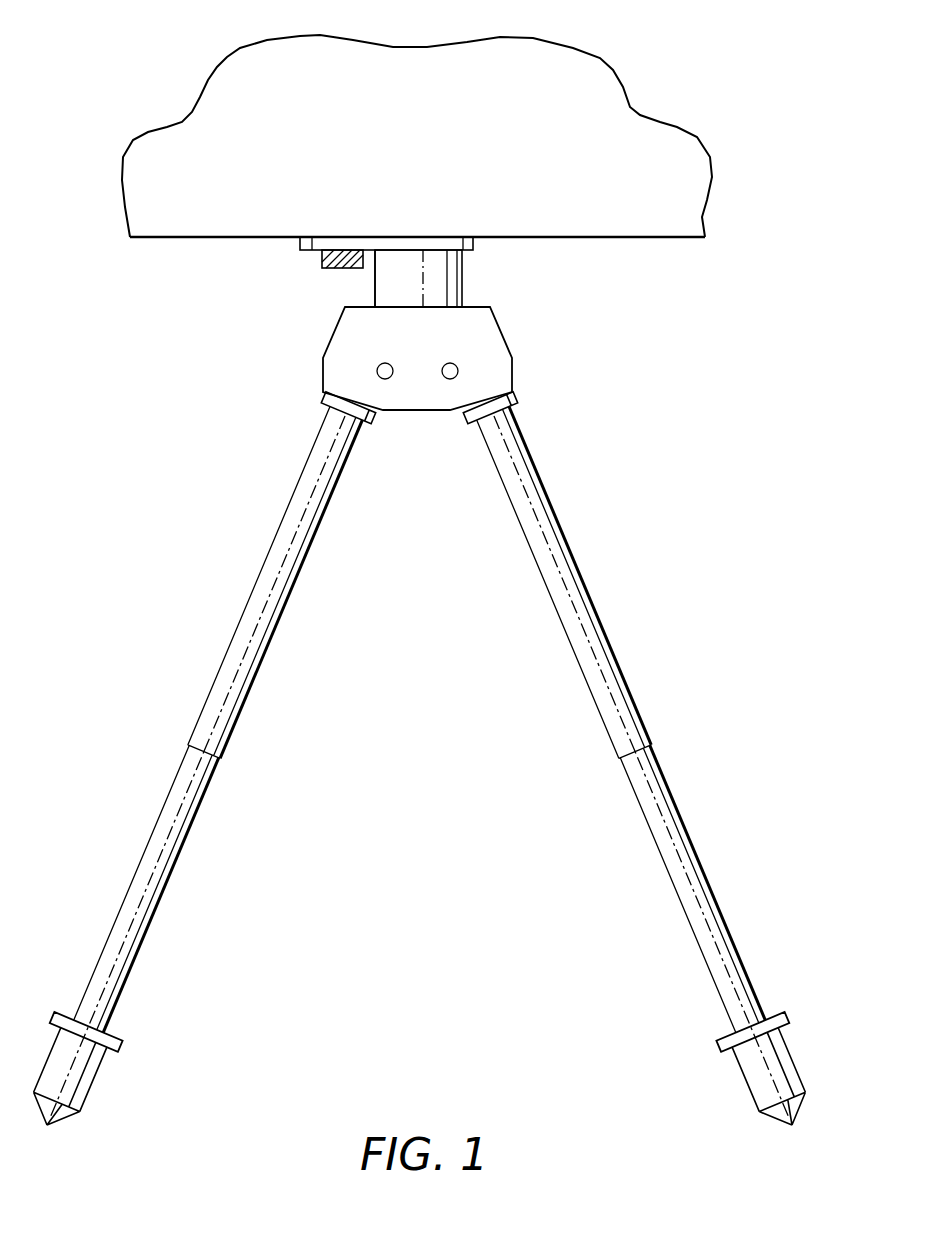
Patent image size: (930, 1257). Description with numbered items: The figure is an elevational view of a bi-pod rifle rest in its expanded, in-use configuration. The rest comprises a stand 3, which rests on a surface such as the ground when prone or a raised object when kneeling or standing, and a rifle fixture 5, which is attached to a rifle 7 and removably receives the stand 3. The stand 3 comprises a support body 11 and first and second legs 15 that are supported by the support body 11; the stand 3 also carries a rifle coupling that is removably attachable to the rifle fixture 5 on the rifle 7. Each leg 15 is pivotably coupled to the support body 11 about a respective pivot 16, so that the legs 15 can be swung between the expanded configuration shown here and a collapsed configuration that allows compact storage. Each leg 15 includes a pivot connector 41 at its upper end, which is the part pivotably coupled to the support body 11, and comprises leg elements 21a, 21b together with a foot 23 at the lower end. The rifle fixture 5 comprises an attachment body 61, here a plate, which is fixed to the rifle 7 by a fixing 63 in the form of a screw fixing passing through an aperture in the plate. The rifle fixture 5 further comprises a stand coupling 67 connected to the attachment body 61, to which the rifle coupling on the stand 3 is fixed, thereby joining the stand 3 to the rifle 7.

The stand 3 is at (420, 753).
The rifle fixture 5 is at (424, 277).
The rifle 7 is at (598, 60).
The support body 11 is at (423, 344).
The legs 15 is at (420, 753).
The pivot 16 is at (378, 368).
The leg element 21a is at (283, 589).
The leg element 21b is at (178, 848).
The foot 23 is at (141, 1046).
The pivot connector 41 is at (322, 396).
The attachment body 61 is at (300, 244).
The fixing 63 is at (320, 262).
The stand coupling 67 is at (375, 292).